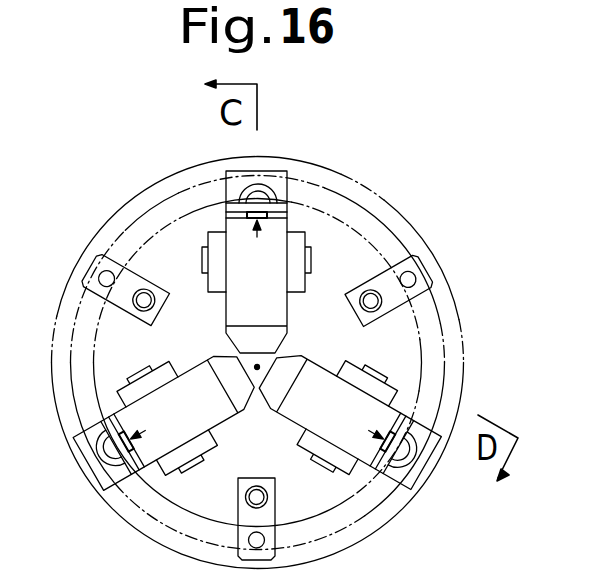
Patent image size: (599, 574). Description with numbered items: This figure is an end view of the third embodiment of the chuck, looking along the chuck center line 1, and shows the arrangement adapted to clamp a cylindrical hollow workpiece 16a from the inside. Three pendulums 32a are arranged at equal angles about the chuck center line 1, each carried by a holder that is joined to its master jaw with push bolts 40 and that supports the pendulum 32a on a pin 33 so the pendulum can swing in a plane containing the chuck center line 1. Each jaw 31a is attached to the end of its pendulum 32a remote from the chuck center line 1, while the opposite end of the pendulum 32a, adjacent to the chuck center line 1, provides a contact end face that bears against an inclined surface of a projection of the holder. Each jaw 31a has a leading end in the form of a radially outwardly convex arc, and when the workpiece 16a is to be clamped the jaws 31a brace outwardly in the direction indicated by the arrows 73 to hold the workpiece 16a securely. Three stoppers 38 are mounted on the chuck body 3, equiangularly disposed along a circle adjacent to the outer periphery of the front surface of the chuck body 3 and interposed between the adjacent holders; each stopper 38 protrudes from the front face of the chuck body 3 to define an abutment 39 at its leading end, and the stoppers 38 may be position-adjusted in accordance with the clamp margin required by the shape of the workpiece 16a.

The chuck center line 1 is at (254, 365).
The chuck body 3 is at (368, 189).
The cylindrical hollow workpiece 16a is at (372, 234).
The jaw 31a is at (284, 203).
The pendulum 32a is at (288, 314).
The pin 33 is at (312, 262).
The stopper 38 is at (399, 265).
The abutment 39 is at (420, 277).
The push bolt 40 is at (262, 197).
The arrows 73 is at (257, 237).